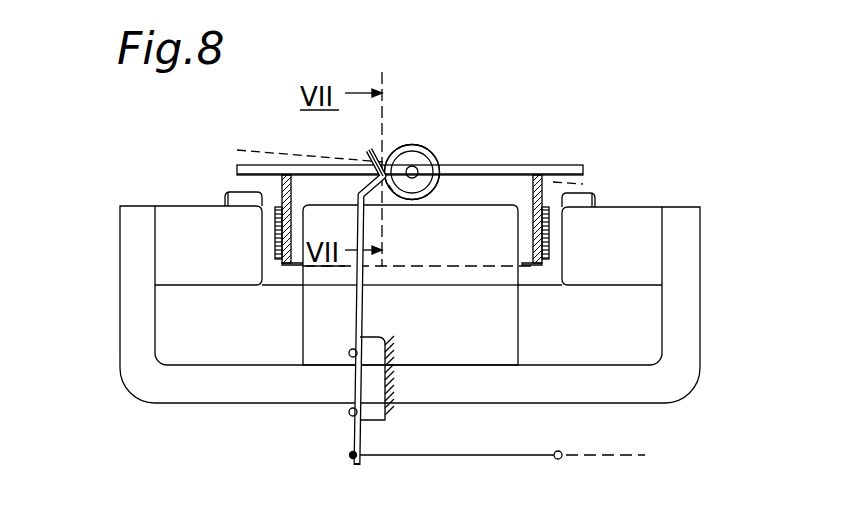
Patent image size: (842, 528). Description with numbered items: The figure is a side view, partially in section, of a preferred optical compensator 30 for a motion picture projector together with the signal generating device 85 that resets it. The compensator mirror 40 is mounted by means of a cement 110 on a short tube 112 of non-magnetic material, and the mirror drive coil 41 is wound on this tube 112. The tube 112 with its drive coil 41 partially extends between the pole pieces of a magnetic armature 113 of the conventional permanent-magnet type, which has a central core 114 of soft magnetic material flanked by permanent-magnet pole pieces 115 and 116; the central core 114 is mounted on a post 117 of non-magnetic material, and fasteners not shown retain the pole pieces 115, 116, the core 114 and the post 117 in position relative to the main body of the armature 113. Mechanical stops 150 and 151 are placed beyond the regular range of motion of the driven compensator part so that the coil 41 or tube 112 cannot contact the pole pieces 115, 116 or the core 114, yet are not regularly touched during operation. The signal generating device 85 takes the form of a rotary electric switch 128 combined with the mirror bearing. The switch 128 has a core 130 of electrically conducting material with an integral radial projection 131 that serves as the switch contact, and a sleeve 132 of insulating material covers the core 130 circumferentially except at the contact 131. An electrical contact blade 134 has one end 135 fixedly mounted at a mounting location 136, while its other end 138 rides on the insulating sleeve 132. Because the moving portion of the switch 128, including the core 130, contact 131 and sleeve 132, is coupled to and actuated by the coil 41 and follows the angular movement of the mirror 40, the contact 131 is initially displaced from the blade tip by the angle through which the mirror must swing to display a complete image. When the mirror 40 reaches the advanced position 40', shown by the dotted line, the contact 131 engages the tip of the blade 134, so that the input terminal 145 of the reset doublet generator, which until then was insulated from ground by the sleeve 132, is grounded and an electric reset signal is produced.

The optical compensator 30 is at (565, 327).
The compensator mirror 40 is at (426, 155).
The advanced position of the compensator mirror 40' is at (395, 152).
The mirror drive coil 41 is at (273, 262).
The signal generating device 85 is at (442, 141).
The cement 110 is at (235, 203).
The short tube 112 is at (548, 192).
The magnetic armature 113 is at (121, 340).
The central core 114 is at (478, 262).
The permanent-magnet pole piece 115 is at (168, 205).
The permanent-magnet pole piece 116 is at (650, 214).
The post 117 is at (476, 347).
The rotary electric switch 128 is at (411, 156).
The core 130 is at (428, 170).
The radial projection 131 is at (389, 188).
The sleeve 132 is at (398, 147).
The electrical contact blade 134 is at (363, 309).
The end of the contact blade 135 is at (352, 381).
The mounting of the contact blade 136 is at (388, 419).
The other end of the contact blade 138 is at (369, 148).
The input terminal 145 is at (558, 459).
The mechanical stop 150 is at (234, 205).
The mechanical stop 151 is at (587, 205).